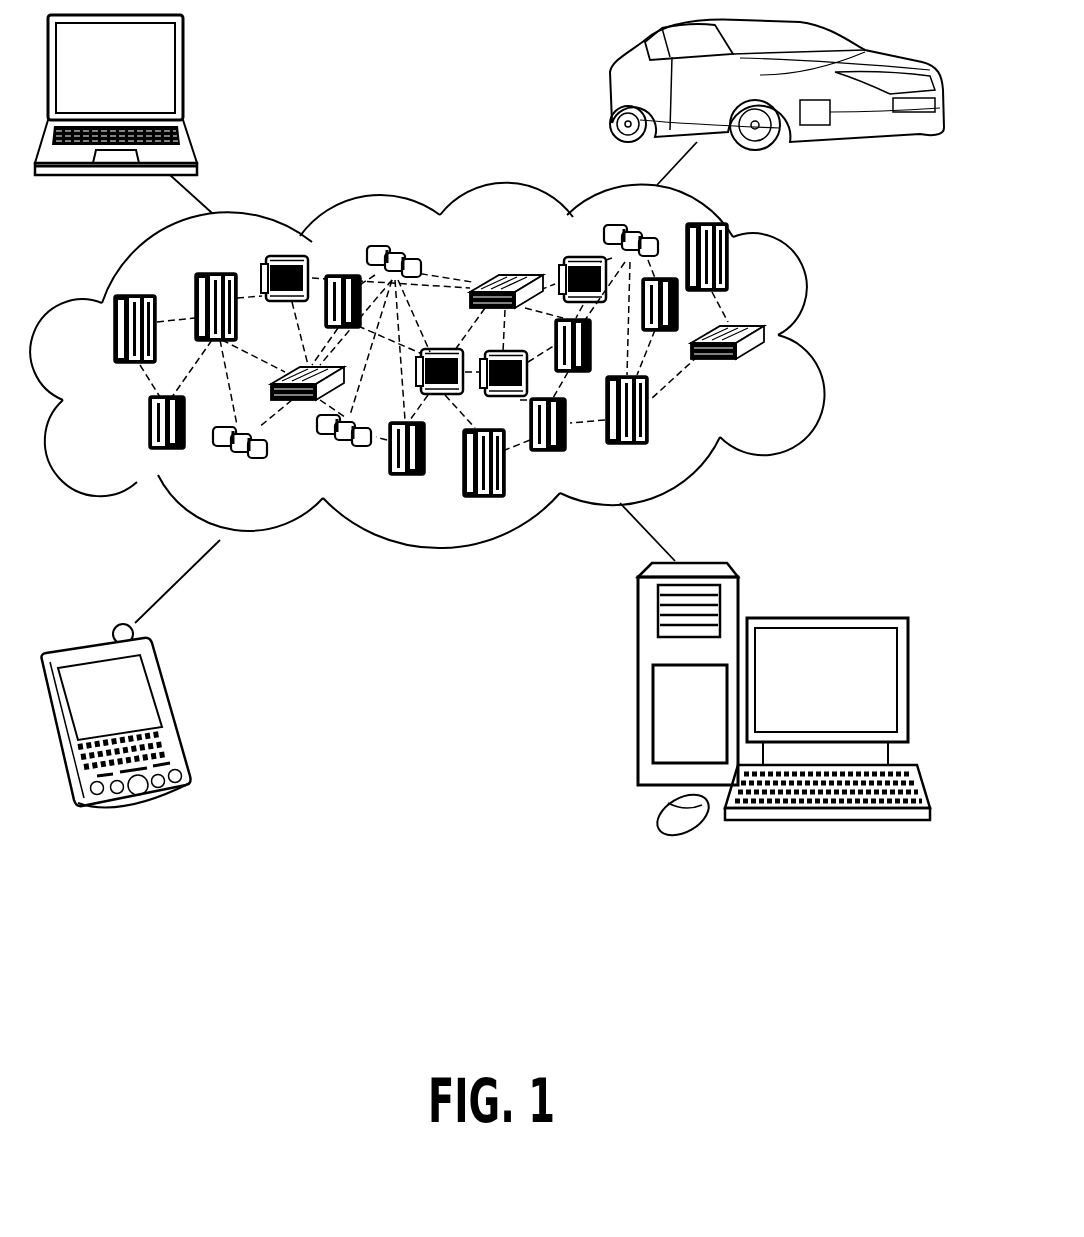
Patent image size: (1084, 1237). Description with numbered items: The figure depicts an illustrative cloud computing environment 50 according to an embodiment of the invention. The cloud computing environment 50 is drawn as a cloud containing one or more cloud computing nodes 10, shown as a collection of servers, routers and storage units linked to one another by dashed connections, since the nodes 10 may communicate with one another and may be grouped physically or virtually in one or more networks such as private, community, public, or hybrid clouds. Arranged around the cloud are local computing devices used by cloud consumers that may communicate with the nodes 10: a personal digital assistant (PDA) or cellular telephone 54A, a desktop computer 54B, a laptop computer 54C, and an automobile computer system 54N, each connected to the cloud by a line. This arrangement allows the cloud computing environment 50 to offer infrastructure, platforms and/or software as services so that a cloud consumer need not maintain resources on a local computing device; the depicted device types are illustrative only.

The cloud computing nodes 10 is at (774, 370).
The cloud computing environment 50 is at (825, 340).
The personal digital assistant (PDA) or cellular telephone 54A is at (172, 710).
The desktop computer 54B is at (822, 618).
The laptop computer 54C is at (183, 77).
The automobile computer system 54N is at (612, 90).